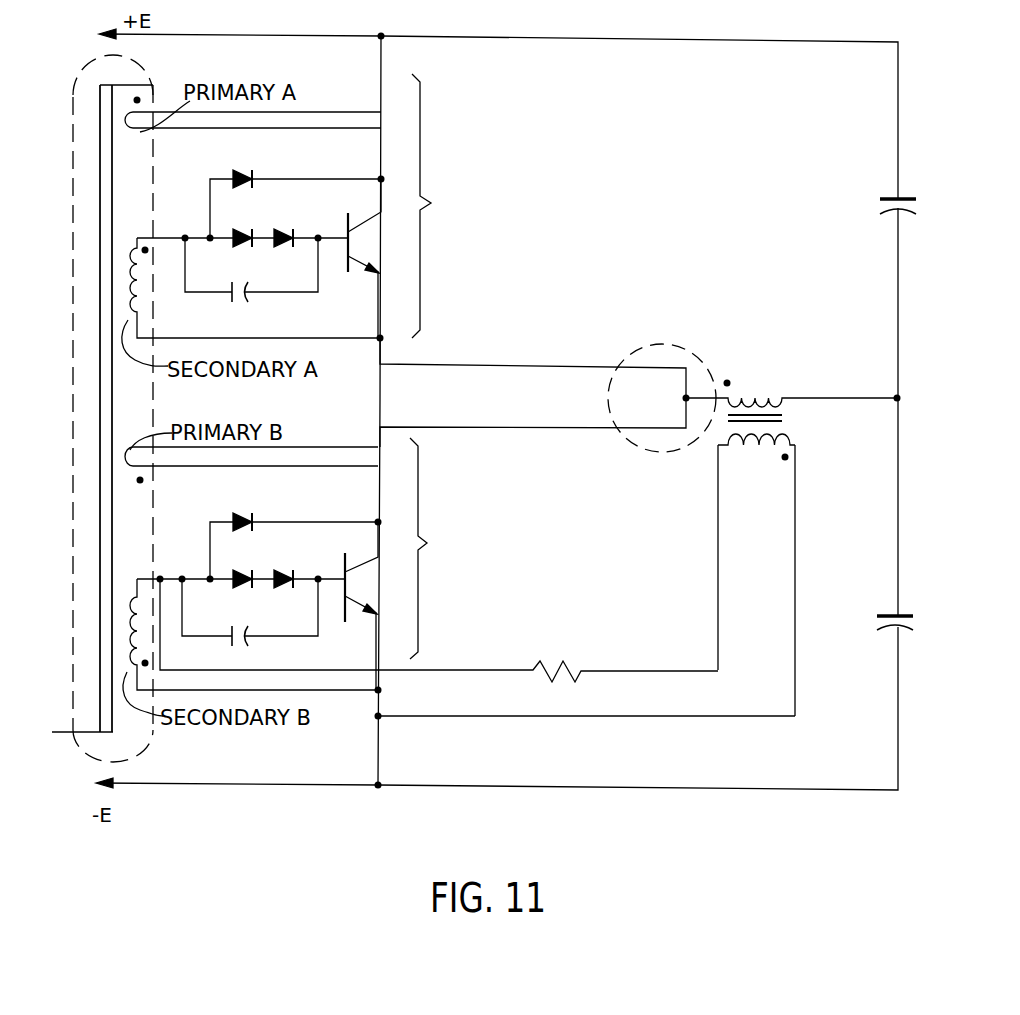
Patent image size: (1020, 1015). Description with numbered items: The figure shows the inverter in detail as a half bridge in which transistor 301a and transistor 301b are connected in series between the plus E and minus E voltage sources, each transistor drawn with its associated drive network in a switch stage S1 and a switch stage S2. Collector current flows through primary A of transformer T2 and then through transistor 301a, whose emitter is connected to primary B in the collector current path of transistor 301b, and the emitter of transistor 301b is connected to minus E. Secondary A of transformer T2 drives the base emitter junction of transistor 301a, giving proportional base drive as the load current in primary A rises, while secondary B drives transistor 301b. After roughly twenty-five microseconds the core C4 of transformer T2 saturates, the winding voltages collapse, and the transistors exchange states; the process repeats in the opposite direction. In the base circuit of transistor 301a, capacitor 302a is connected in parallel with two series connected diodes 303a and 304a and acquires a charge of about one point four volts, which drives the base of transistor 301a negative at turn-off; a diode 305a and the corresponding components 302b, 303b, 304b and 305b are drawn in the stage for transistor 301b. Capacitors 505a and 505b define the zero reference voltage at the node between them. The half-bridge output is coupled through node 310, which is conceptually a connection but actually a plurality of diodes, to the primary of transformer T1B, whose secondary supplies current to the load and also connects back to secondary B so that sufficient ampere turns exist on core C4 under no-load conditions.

The transformer T2 is at (82, 62).
The core C4 is at (100, 482).
The diode 305a is at (253, 170).
The diode 303a is at (235, 232).
The diode 304a is at (292, 229).
The capacitor 302a is at (244, 298).
The transistor 301a is at (350, 250).
The switch S1 is at (437, 206).
The node 310 is at (650, 447).
The transformer T1B is at (794, 423).
The capacitor 505a is at (886, 195).
The capacitor 505b is at (881, 614).
The diode 305b is at (253, 513).
The diode 303b is at (235, 574).
The diode 304b is at (292, 571).
The capacitor 302b is at (244, 642).
The transistor 301b is at (350, 590).
The switch S2 is at (434, 548).